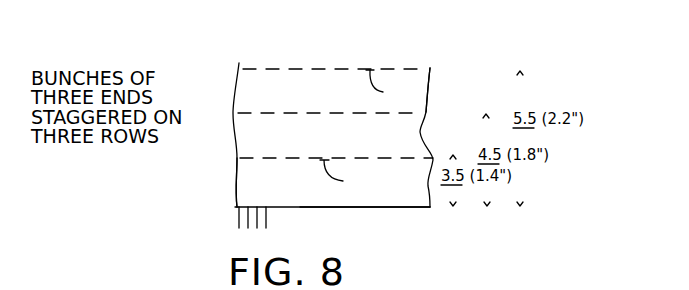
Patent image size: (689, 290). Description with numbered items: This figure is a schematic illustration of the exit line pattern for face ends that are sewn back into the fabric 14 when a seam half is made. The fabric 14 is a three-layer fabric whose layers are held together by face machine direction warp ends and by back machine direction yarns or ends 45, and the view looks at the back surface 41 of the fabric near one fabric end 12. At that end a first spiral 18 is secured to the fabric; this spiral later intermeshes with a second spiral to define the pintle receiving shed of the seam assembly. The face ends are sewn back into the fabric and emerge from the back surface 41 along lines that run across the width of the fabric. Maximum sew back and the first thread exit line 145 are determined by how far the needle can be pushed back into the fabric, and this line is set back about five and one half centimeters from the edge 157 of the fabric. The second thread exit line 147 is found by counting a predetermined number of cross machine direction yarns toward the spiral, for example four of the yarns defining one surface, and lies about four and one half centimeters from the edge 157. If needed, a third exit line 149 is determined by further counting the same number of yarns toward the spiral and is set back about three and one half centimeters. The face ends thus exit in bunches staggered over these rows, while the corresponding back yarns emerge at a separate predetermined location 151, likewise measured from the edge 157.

The fabric end 12 is at (235, 187).
The fabric 14 is at (416, 130).
The first spiral 18 is at (238, 218).
The back surface 41 is at (429, 79).
The back machine direction yarn 45 is at (365, 132).
The first thread exit line 145 is at (291, 68).
The second thread exit line 147 is at (300, 112).
The third thread exit line 149 is at (302, 156).
The predetermined location 151 is at (530, 284).
The edge of the fabric 157 is at (377, 208).